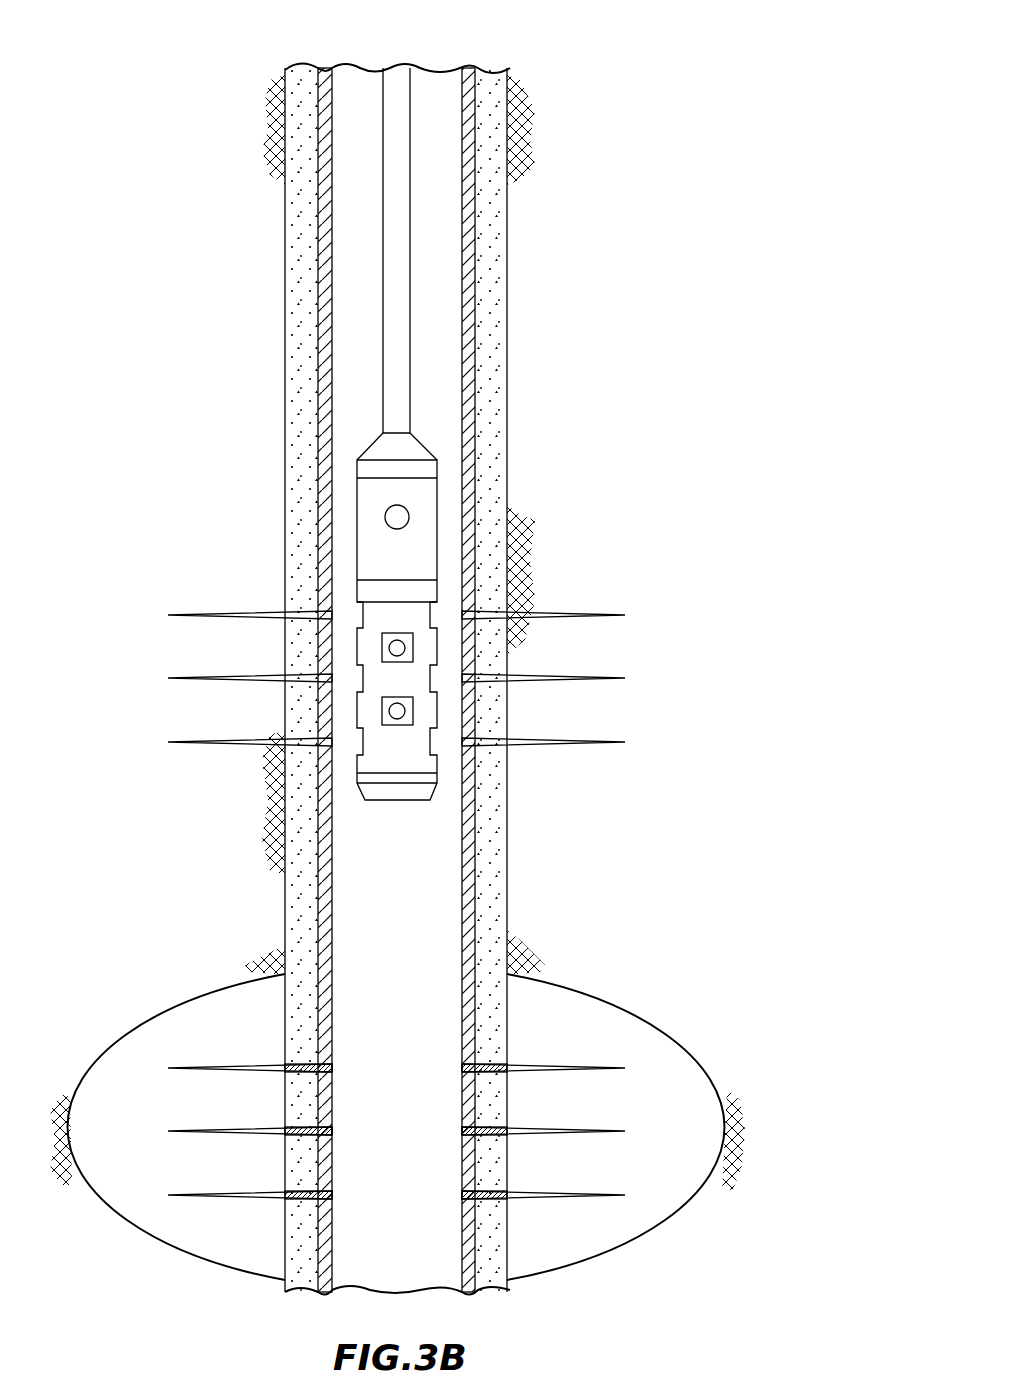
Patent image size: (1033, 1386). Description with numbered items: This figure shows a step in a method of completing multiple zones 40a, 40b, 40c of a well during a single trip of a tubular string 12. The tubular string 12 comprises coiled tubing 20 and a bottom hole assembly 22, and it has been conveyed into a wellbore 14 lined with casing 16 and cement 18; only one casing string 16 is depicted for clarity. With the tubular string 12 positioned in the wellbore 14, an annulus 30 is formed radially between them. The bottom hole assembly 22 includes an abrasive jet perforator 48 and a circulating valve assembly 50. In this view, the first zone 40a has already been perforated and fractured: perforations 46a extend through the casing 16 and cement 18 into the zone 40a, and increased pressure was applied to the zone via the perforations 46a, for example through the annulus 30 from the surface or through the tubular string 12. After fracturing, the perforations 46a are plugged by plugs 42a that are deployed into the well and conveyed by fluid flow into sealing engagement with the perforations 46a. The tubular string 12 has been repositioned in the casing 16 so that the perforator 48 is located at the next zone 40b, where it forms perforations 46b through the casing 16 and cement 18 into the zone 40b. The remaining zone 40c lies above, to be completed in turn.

The tubular string 12 is at (440, 410).
The wellbore 14 is at (290, 302).
The casing 16 is at (318, 213).
The cement 18 is at (510, 245).
The coiled tubing 20 is at (383, 97).
The bottom hole assembly 22 is at (347, 588).
The annulus 30 is at (437, 208).
The first zone 40a is at (757, 1170).
The next zone 40b is at (672, 672).
The zone 40c is at (637, 300).
The plugs 42a is at (335, 1064).
The perforations 46a is at (213, 1070).
The perforations 46b is at (213, 614).
The abrasive jet perforator 48 is at (437, 645).
The circulating valve assembly 50 is at (437, 507).